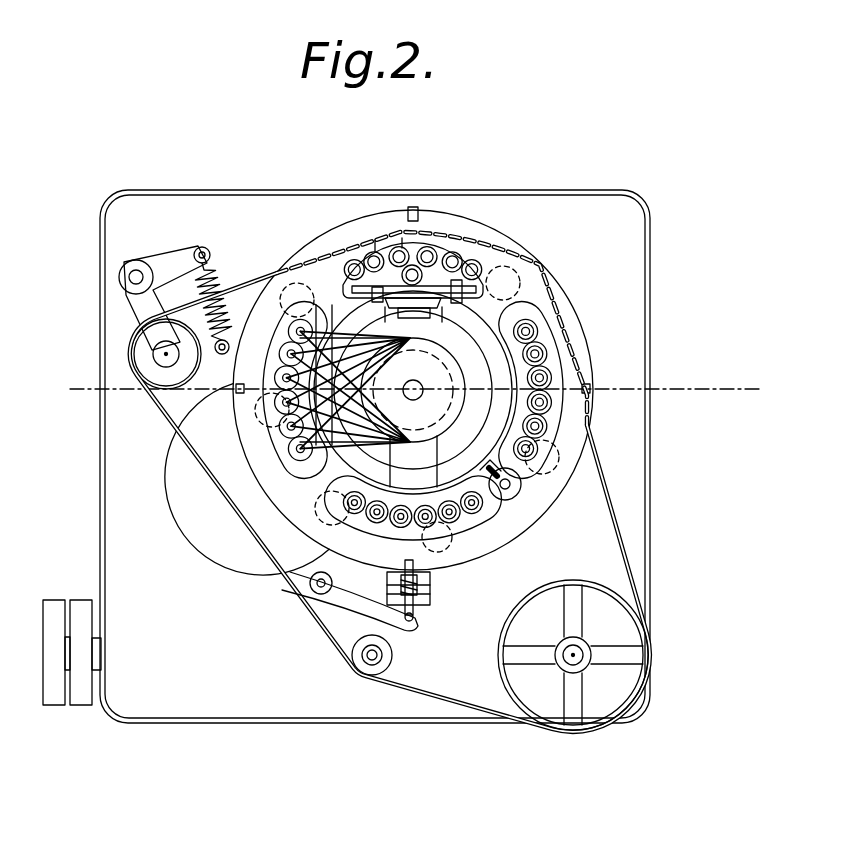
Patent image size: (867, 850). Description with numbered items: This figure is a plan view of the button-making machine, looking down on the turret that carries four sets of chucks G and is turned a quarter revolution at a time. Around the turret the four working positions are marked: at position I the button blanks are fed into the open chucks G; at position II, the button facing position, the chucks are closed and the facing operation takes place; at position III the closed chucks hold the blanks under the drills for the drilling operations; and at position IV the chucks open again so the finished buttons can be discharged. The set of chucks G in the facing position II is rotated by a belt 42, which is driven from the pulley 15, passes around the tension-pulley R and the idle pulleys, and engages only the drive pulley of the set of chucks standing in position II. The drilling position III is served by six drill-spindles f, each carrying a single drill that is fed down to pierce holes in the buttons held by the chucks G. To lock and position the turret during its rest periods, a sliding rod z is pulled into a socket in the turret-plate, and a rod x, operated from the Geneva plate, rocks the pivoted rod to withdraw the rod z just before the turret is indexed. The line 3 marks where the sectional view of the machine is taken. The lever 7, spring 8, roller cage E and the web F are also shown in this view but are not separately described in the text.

The button facing position II is at (413, 357).
The section line 3- 3 is at (683, 366).
The tension lever 7 is at (164, 258).
The tension spring 8 is at (224, 272).
The tension pulley R is at (150, 352).
The upper roller cage E is at (482, 267).
The blank feeding position I is at (586, 386).
The drilling position III is at (268, 392).
The left guide rollers and web F is at (292, 440).
The discharge position IV is at (410, 530).
The chuck G is at (462, 512).
The belt 42 is at (610, 456).
The drill-spindle f is at (300, 462).
The rod z is at (415, 600).
The rod x is at (394, 626).
The pulley 15 is at (503, 688).